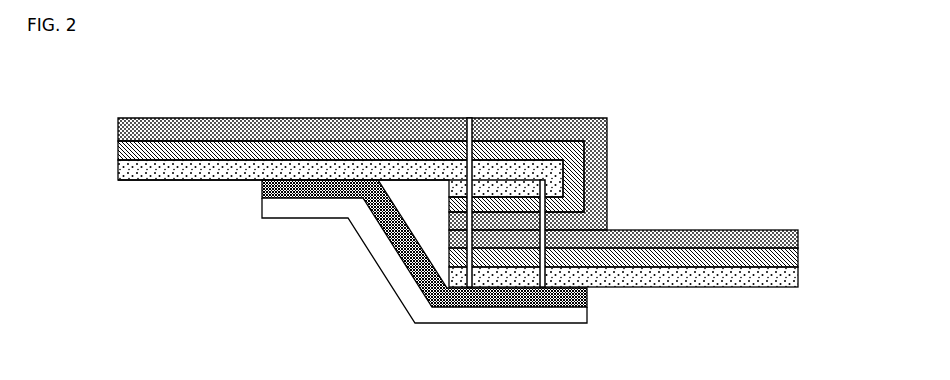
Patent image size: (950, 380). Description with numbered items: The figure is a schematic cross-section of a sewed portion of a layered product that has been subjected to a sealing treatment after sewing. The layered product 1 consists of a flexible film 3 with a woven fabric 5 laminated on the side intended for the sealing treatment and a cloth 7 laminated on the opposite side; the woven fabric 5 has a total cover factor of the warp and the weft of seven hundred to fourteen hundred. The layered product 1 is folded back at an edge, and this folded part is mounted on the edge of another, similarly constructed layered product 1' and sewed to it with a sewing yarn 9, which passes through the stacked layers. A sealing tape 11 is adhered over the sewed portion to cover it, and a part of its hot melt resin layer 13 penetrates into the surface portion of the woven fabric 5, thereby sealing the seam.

The layered product 1 is at (352, 77).
The other layered product 1' is at (712, 168).
The flexible film 3 is at (117, 153).
The woven fabric 5 is at (117, 168).
The cloth 7 is at (117, 130).
The sewing yarn 9 is at (472, 140).
The sealing tape 11 is at (365, 285).
The hot melt resin layer 13 is at (588, 295).